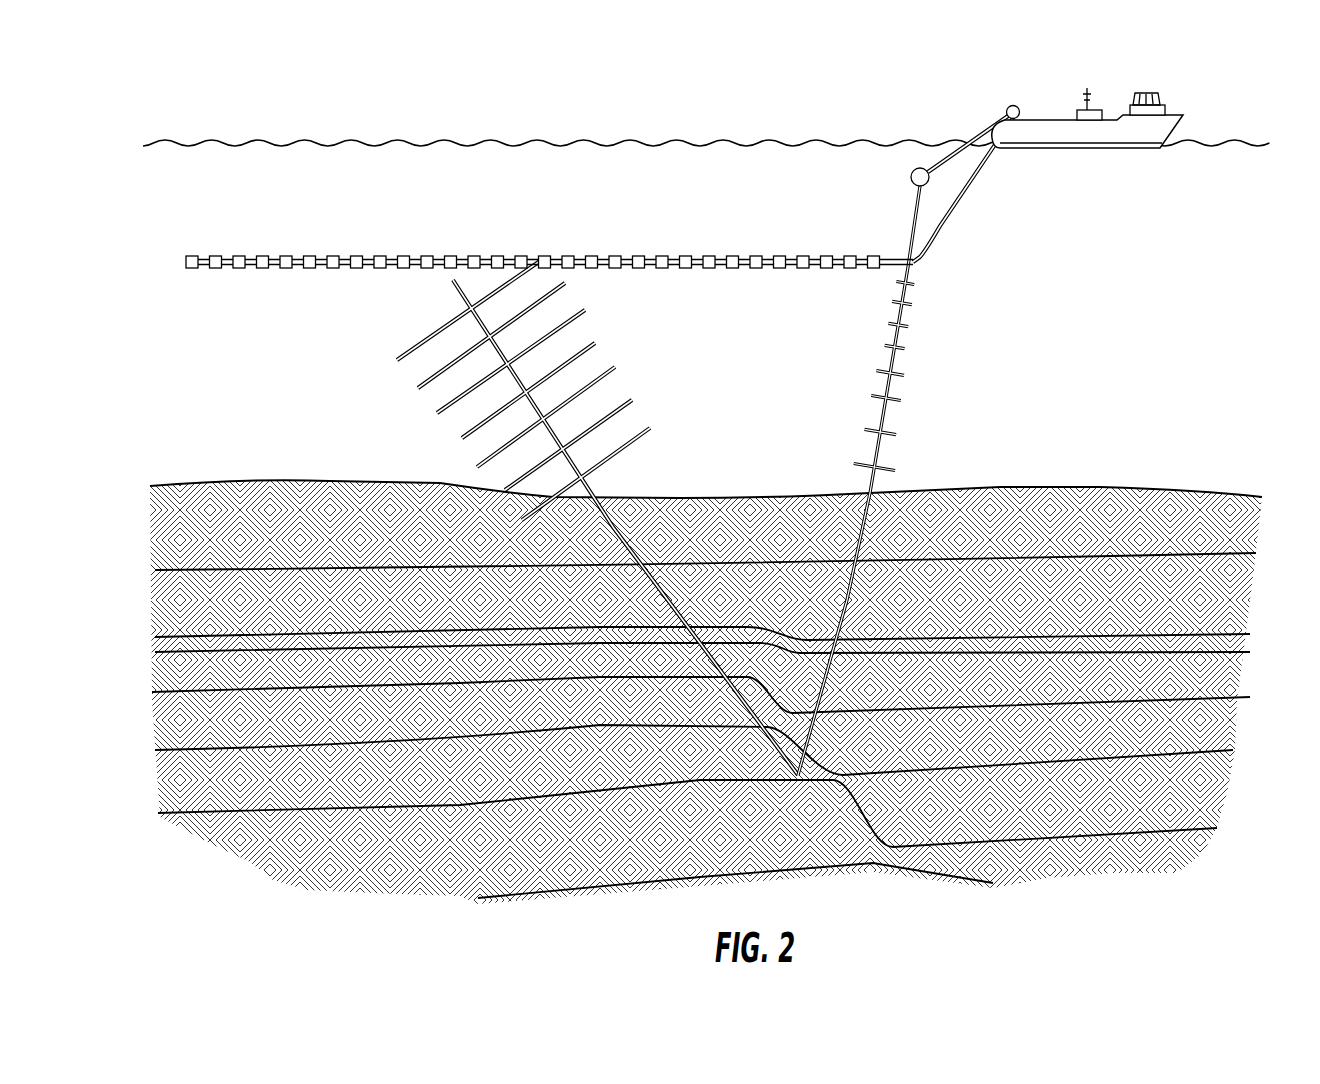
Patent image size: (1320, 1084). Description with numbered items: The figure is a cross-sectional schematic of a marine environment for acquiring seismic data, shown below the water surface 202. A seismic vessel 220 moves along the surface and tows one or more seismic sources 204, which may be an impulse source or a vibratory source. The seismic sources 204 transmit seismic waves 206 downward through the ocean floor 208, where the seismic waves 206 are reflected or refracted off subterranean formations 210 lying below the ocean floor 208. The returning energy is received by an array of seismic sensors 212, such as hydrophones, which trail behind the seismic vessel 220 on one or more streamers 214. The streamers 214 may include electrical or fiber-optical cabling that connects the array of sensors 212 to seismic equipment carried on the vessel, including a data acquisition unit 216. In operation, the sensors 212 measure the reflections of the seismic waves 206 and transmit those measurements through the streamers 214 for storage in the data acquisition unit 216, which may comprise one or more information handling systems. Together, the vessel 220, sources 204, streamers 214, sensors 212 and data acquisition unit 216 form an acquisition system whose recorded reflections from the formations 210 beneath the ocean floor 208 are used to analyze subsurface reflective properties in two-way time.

The water surface 202 is at (657, 145).
The seismic source 204 is at (912, 181).
The seismic waves 206 is at (903, 402).
The ocean floor 208 is at (1100, 487).
The subterranean formations 210 is at (837, 785).
The seismic sensors 212 is at (192, 256).
The streamers 214 is at (970, 190).
The data acquisition unit 216 is at (1133, 93).
The seismic vessel 220 is at (1180, 113).